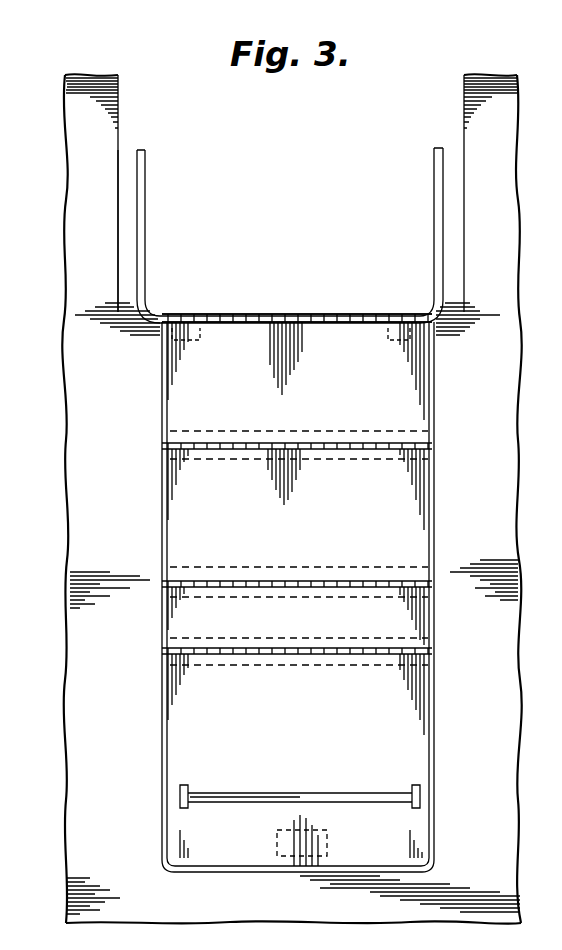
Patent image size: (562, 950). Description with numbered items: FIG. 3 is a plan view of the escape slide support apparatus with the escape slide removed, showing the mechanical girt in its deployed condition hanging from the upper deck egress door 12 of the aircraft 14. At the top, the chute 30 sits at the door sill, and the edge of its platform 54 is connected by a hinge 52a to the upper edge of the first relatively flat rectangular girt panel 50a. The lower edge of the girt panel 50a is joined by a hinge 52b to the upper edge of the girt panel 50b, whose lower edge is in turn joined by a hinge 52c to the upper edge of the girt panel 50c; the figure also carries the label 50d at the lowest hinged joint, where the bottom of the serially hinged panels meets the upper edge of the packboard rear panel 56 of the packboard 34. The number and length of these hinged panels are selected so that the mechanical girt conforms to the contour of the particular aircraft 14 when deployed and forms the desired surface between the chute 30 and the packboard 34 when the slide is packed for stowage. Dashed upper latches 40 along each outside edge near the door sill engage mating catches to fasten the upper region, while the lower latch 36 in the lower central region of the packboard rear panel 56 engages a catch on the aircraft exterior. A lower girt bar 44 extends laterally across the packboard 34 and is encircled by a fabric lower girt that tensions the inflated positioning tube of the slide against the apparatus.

The upper deck egress door 12 is at (118, 195).
The aircraft 14 is at (80, 485).
The chute 30 is at (146, 210).
The packboard 34 is at (405, 760).
The lower latch 36 is at (300, 862).
The upper latches 40 is at (188, 340).
The lower girt bar 44 is at (285, 793).
The girt panel 50a is at (420, 398).
The girt panel 50b is at (422, 526).
The girt panel 50c is at (428, 627).
The compartment 50d is at (430, 655).
The hinge 52a is at (352, 316).
The hinge 52b is at (430, 443).
The hinge 52c is at (432, 581).
The platform 54 is at (300, 300).
The packboard rear panel 56 is at (328, 702).